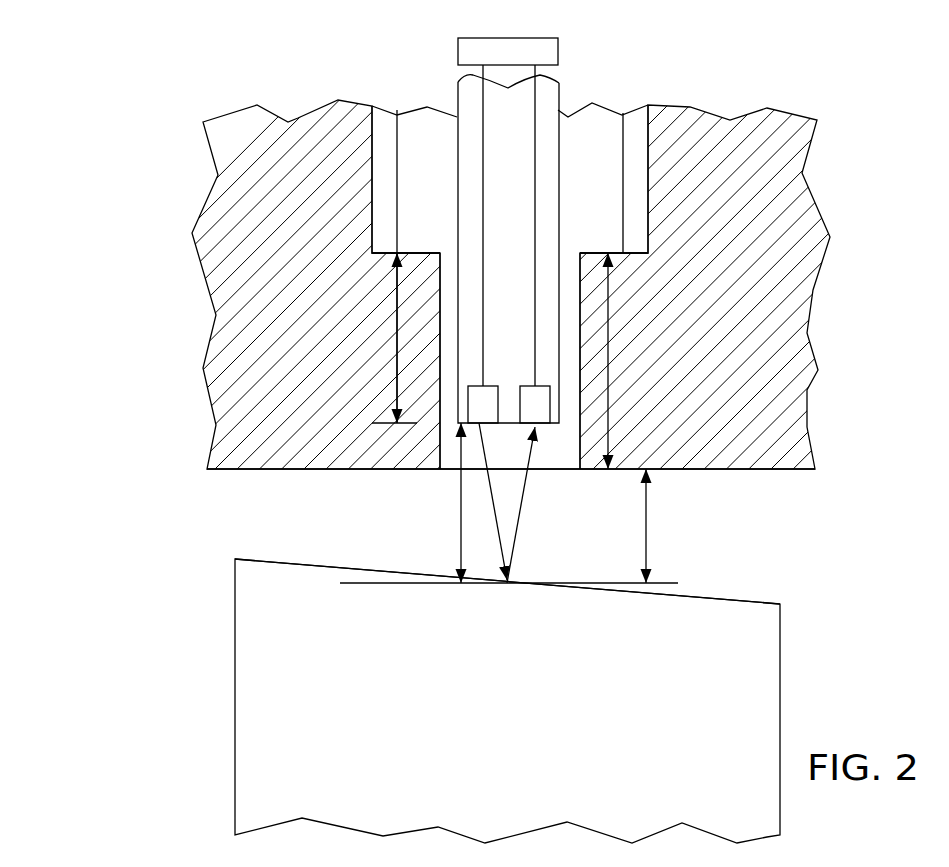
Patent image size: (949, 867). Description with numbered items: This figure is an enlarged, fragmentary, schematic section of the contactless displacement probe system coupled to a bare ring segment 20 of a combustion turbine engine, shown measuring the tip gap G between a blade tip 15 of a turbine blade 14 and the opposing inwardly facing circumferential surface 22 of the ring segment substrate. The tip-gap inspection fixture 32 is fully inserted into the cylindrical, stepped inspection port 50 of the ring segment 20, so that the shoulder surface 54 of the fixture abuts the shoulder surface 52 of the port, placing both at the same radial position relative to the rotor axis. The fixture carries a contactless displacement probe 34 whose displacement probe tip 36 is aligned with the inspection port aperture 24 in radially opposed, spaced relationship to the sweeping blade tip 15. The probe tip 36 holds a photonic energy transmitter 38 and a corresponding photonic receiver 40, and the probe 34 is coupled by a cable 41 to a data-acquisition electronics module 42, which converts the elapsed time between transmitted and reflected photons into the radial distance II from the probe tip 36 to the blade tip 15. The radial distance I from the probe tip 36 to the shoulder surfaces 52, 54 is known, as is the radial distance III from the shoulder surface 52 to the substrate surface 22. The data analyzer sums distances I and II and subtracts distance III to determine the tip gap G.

The turbine blade 14 is at (287, 775).
The blade tip 15 is at (770, 603).
The ring segment 20 is at (233, 295).
The inwardly facing circumferential surface 22 is at (226, 470).
The inspection port aperture 24 is at (582, 433).
The tip-gap inspection fixture 32 is at (628, 132).
The contactless displacement probe 34 is at (452, 385).
The displacement probe tip 36 is at (504, 423).
The photonic energy transmitter 38 is at (482, 403).
The photonic receiver 40 is at (535, 403).
The cable 41 is at (533, 210).
The data-acquisition electronics module 42 is at (558, 47).
The inspection port 50 is at (381, 185).
The shoulder surface 52 is at (418, 253).
The shoulder surface 54 is at (397, 300).
The radial distance I is at (397, 355).
The radial distance II is at (462, 513).
The radial distance III is at (608, 367).
The tip gap G is at (648, 535).